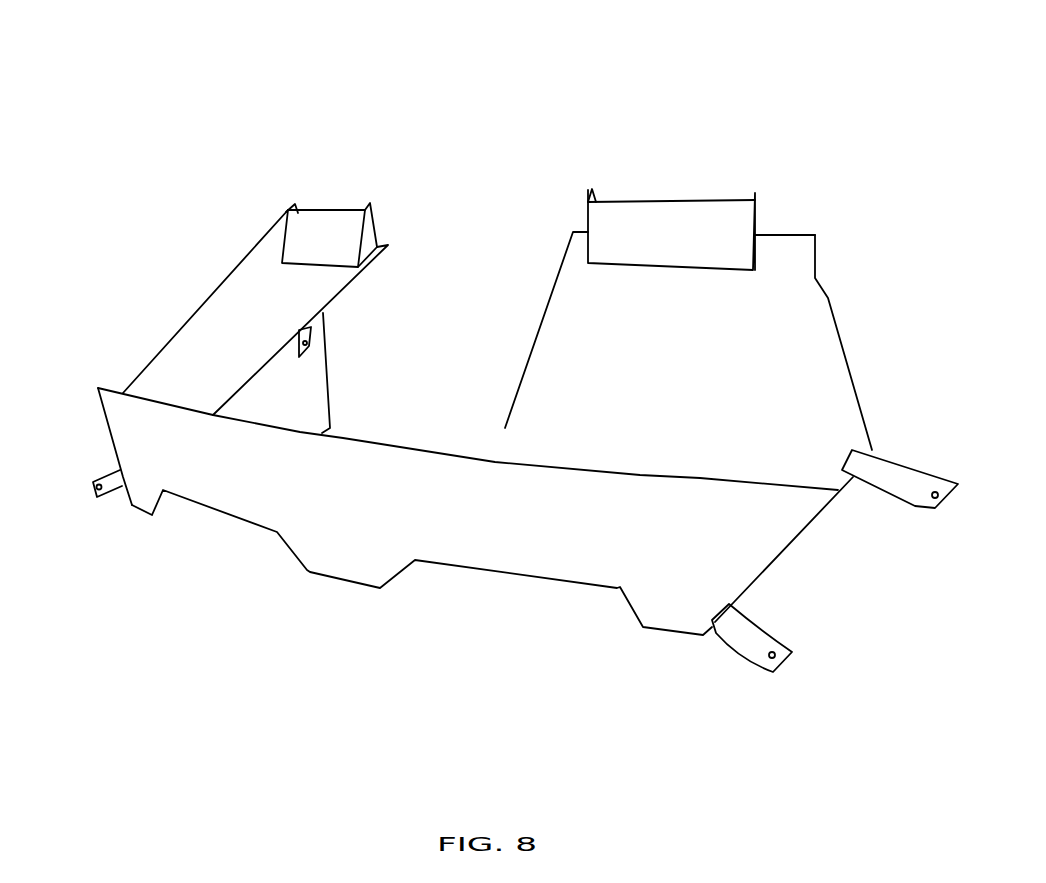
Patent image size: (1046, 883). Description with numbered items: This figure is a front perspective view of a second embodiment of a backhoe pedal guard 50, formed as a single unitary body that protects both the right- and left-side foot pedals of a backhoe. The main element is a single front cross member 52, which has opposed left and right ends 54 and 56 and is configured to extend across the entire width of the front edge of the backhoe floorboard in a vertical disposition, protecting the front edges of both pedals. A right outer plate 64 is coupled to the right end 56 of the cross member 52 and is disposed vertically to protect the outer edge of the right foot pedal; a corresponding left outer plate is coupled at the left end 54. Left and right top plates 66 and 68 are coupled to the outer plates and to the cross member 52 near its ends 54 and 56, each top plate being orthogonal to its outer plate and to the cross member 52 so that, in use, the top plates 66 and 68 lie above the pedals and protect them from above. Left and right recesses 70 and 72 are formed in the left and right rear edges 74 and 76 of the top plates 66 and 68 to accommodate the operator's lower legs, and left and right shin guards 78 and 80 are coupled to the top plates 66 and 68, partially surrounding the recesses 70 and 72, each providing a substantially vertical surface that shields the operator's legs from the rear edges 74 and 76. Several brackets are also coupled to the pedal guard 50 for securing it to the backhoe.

The backhoe pedal guard 50 is at (452, 122).
The front cross member 52 is at (350, 542).
The left end 54 is at (748, 552).
The right end 56 is at (132, 435).
The right outer plate 64 is at (283, 393).
The left top plate 66 is at (787, 368).
The right top plate 68 is at (207, 335).
The left recess 70 is at (697, 200).
The right recess 72 is at (325, 208).
The left rear edge 74 is at (780, 243).
The right rear edge 76 is at (377, 247).
The left shin guard 78 is at (638, 220).
The right shin guard 80 is at (303, 238).